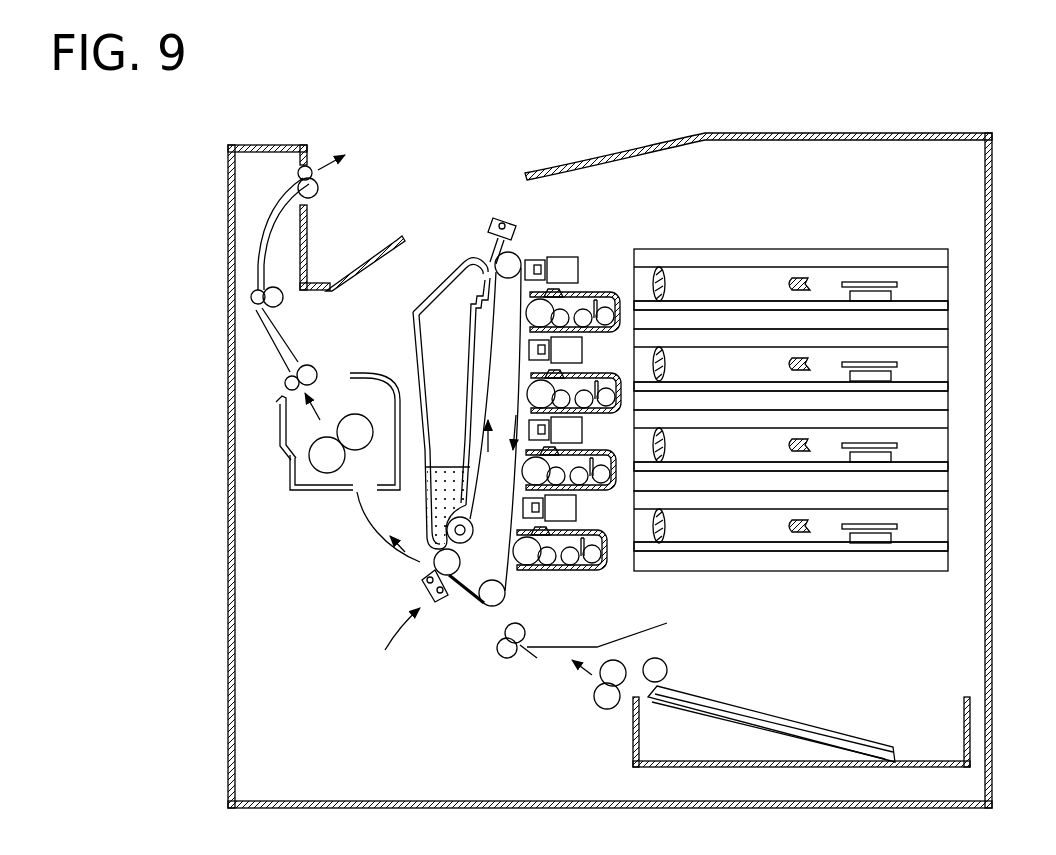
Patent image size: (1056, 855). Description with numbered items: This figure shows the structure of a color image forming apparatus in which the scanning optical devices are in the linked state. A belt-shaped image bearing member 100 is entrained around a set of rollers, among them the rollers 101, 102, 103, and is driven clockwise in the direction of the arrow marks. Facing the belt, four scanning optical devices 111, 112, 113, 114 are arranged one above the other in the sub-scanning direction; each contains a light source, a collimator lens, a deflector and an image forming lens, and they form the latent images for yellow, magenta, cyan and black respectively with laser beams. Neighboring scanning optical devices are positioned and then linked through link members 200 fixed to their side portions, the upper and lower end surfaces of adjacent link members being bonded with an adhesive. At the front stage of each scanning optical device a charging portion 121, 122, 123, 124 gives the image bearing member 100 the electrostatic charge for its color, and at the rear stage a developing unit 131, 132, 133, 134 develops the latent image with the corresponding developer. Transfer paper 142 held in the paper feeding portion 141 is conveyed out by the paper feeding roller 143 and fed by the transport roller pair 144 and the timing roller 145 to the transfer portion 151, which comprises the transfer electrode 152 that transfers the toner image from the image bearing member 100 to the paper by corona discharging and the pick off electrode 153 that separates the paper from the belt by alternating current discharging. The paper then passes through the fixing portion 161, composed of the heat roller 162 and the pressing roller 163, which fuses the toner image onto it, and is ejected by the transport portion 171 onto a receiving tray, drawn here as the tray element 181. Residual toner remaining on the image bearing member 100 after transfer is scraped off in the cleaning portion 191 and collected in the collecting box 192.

The belt-shaped image bearing member 100 is at (472, 605).
The roller 101 is at (512, 255).
The roller 102 is at (496, 593).
The roller 103 is at (432, 553).
The scanning optical device 111 is at (948, 285).
The scanning optical device 112 is at (948, 365).
The scanning optical device 113 is at (948, 445).
The scanning optical device 114 is at (948, 524).
The link member 200 is at (948, 320).
The charging portion 121 is at (585, 265).
The charging portion 122 is at (582, 342).
The charging portion 123 is at (583, 432).
The charging portion 124 is at (582, 512).
The developing unit 131 is at (612, 292).
The developing unit 132 is at (597, 405).
The developing unit 133 is at (590, 485).
The developing unit 134 is at (604, 570).
The paper feeding portion 141 is at (838, 718).
The transfer paper 142 is at (785, 716).
The paper feeding roller 143 is at (660, 668).
The transport roller pair 144 is at (604, 700).
The timing roller 145 is at (518, 634).
The transfer portion 151 is at (390, 644).
The transfer electrode 152 is at (435, 600).
The pick off electrode 153 is at (420, 585).
The fixing portion 161 is at (262, 432).
The heat roller 162 is at (310, 455).
The pressing roller 163 is at (355, 430).
The transport portion 171 is at (258, 235).
The discharge tray 181 is at (368, 250).
The cleaning portion 191 is at (500, 215).
The collecting box 192 is at (413, 320).